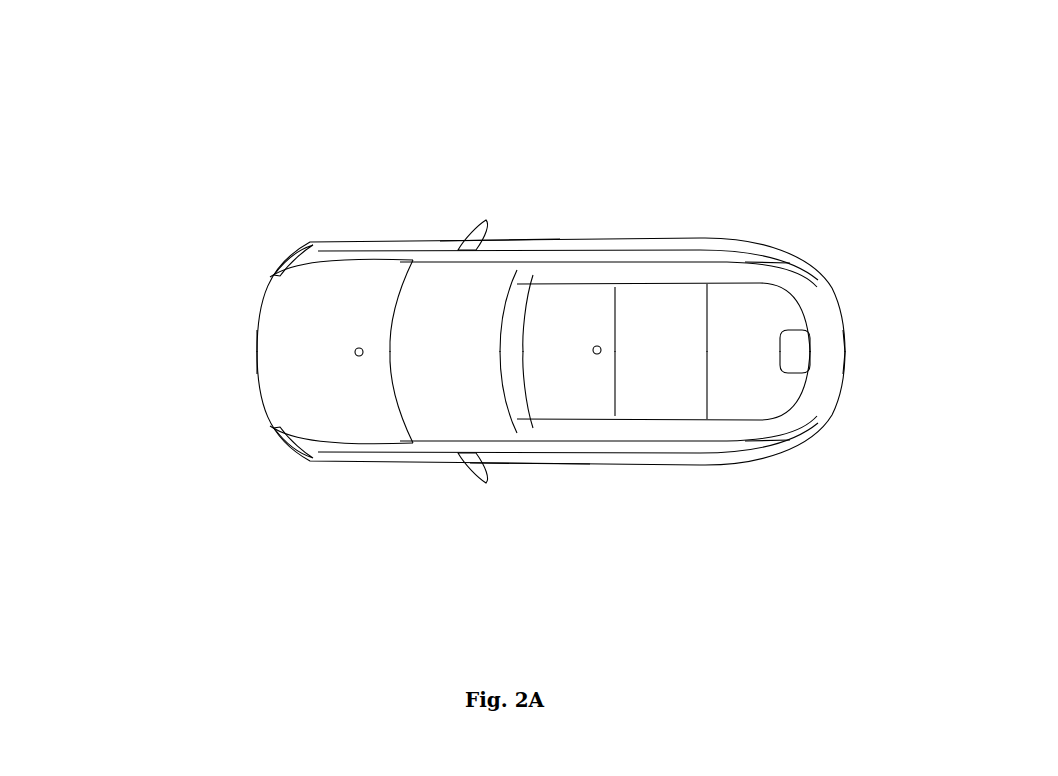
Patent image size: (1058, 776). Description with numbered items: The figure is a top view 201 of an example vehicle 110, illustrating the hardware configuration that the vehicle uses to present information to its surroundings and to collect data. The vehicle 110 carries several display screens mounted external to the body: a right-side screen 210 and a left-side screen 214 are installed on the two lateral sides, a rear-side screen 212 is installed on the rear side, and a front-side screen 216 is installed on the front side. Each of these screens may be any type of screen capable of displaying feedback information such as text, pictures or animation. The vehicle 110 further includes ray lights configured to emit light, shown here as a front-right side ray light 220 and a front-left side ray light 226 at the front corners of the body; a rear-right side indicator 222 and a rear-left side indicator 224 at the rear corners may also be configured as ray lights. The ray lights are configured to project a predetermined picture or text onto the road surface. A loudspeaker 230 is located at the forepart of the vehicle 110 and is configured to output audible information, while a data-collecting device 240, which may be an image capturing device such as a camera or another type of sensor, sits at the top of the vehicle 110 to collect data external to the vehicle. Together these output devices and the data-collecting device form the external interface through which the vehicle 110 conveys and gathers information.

The top view 201 is at (222, 97).
The vehicle 110 is at (827, 300).
The right-side screen 210 is at (486, 70).
The rear-side screen 212 is at (863, 538).
The left-side screen 214 is at (493, 624).
The front-side screen 216 is at (197, 538).
The front-right side ray light 220 is at (93, 248).
The rear-right side indicator 222 is at (753, 146).
The rear-left side indicator 224 is at (788, 442).
The front-left side ray light 226 is at (274, 614).
The loudspeaker 230 is at (388, 146).
The data-collecting device 240 is at (563, 146).